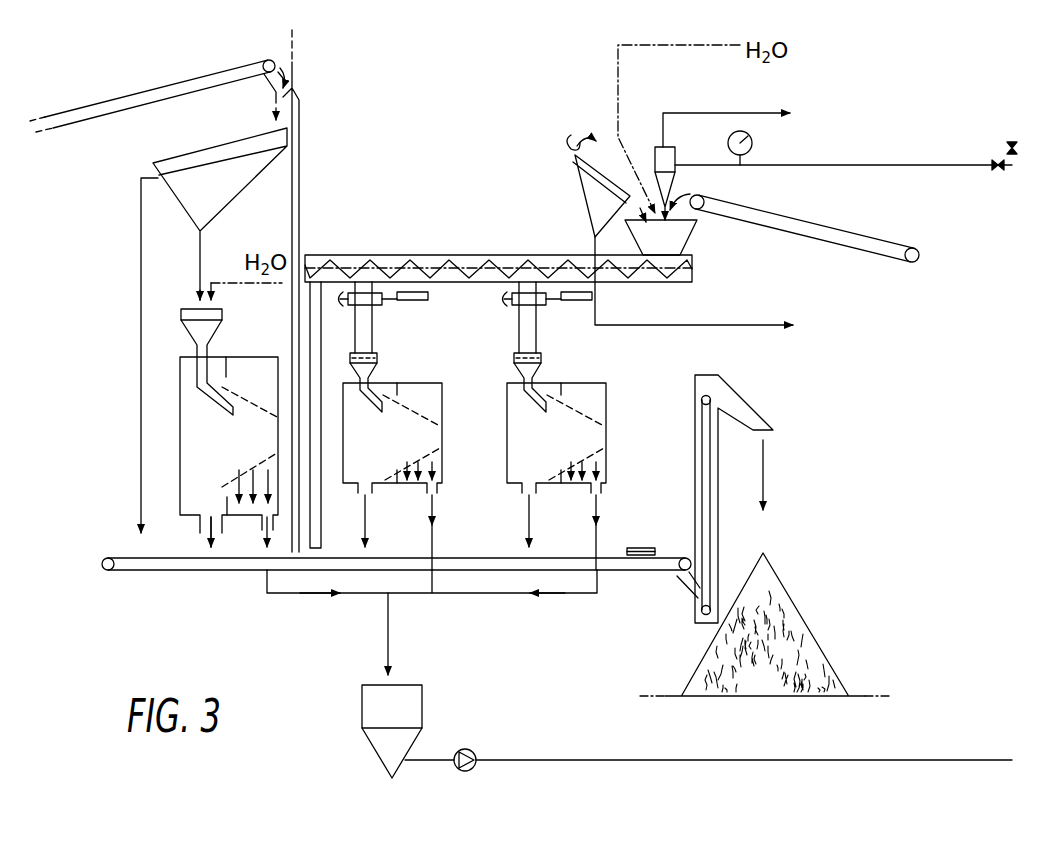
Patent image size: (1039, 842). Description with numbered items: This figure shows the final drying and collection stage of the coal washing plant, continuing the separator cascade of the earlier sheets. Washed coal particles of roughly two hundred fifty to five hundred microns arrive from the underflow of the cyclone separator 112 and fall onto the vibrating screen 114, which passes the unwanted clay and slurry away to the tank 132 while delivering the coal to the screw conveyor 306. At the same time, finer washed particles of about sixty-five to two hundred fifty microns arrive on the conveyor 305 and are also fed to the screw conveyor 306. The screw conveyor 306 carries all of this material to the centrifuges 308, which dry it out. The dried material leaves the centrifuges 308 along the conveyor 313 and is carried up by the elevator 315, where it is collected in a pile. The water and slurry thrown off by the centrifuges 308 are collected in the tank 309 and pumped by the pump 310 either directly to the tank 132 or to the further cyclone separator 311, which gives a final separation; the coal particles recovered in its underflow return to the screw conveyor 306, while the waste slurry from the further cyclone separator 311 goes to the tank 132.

The cyclone separator 112 is at (571, 130).
The vibrating screen 114 is at (597, 184).
The tank 132 is at (1012, 760).
The conveyor 305 is at (803, 222).
The screw conveyor 306 is at (443, 255).
The centrifuges 308 is at (540, 436).
The tank 309 is at (403, 705).
The pump 310 is at (470, 752).
The further cyclone separator 311 is at (668, 162).
The conveyor 313 is at (477, 558).
The elevator 315 is at (700, 460).